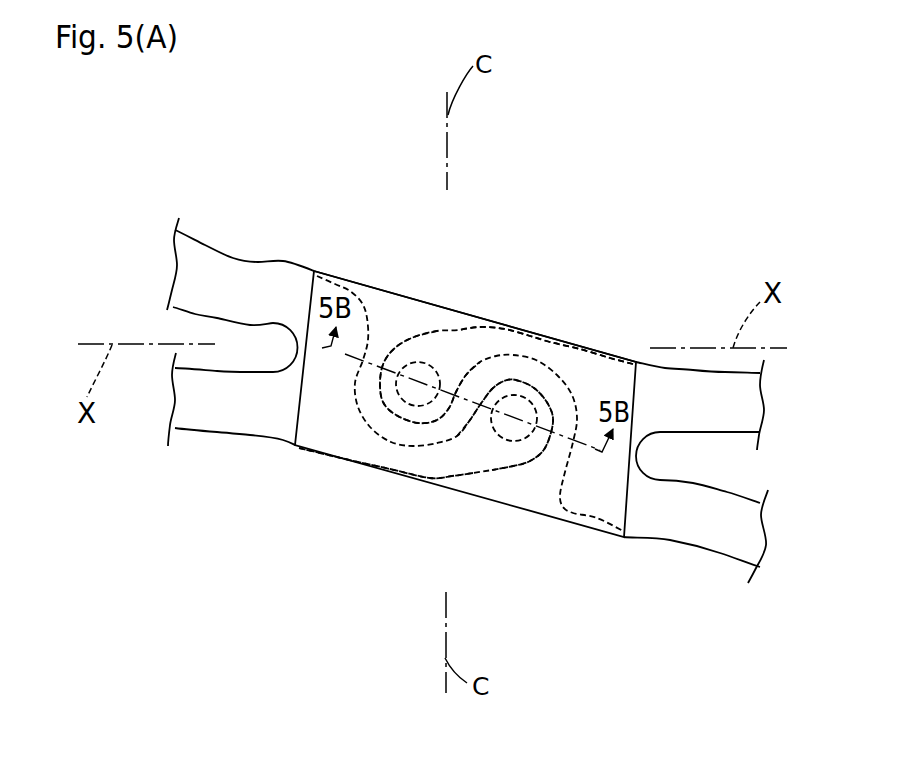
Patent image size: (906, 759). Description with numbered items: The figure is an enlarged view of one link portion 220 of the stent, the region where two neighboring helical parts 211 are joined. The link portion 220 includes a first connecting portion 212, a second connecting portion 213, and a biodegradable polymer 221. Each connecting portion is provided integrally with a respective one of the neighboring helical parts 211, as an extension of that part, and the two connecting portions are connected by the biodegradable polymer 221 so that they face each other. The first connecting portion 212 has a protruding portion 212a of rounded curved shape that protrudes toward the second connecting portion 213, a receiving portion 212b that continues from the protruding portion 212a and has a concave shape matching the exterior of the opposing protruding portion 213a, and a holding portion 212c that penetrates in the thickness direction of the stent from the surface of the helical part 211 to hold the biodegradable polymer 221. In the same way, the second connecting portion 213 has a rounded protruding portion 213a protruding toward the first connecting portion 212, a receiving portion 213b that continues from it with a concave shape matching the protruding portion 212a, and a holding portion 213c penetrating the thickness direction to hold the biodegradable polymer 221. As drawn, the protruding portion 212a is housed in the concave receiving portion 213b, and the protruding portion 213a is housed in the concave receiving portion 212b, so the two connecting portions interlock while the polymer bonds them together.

The helical part 211 is at (238, 270).
The link portion 220 is at (361, 270).
The biodegradable polymer 221 is at (394, 292).
The first connecting portion 212 is at (366, 472).
The protruding portion 212a is at (545, 452).
The receiving portion 212b is at (398, 453).
The holding portion 212c is at (513, 446).
The second connecting portion 213 is at (556, 326).
The protruding portion 213a is at (390, 352).
The receiving portion 213b is at (525, 346).
The holding portion 213c is at (443, 368).